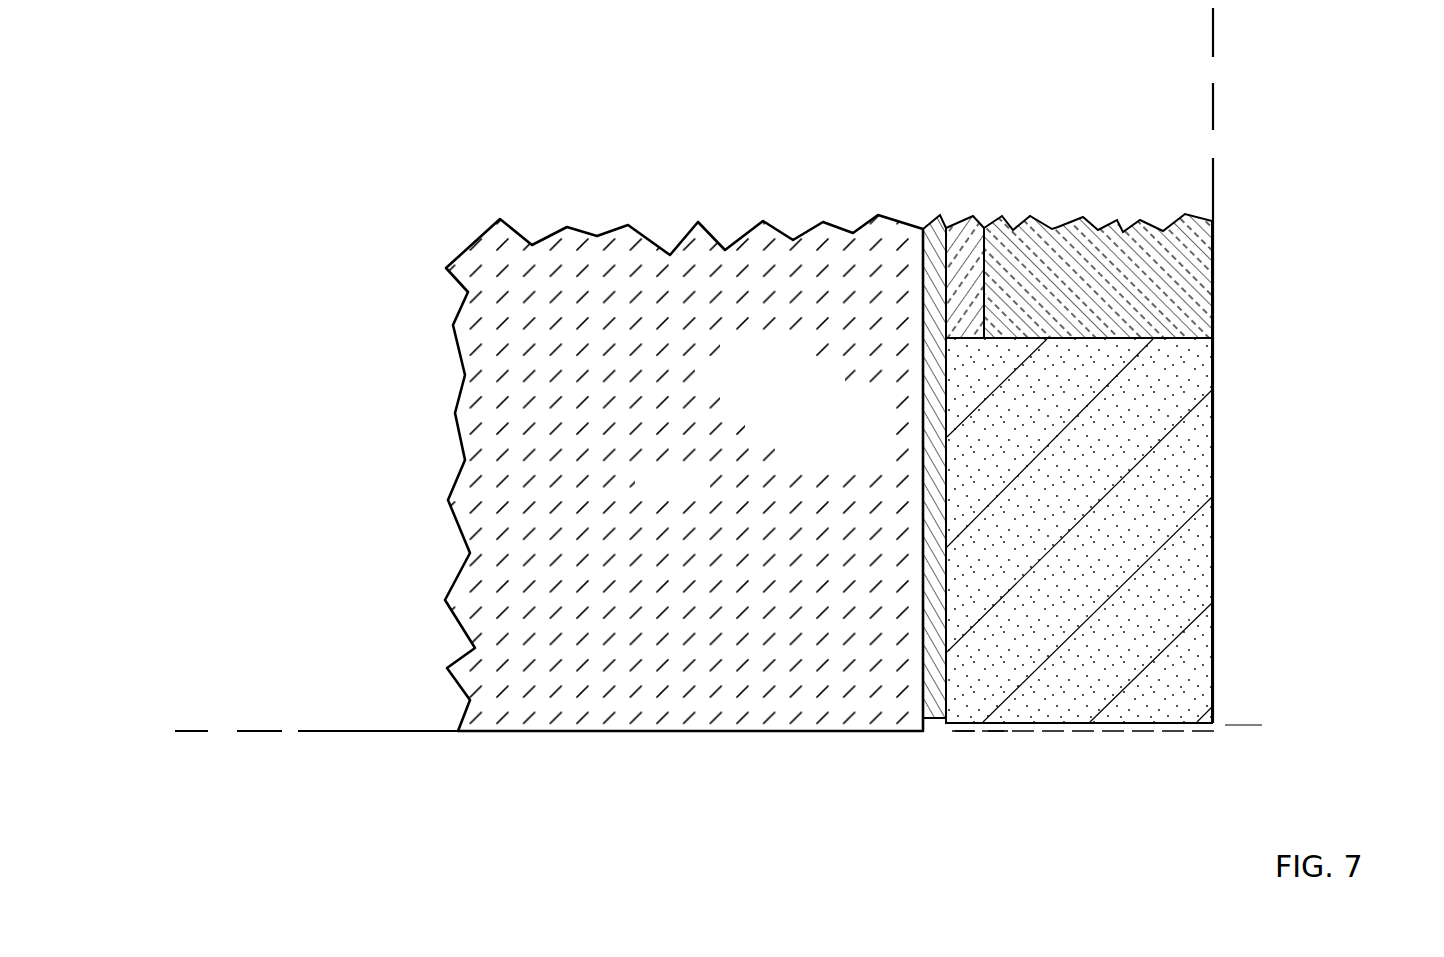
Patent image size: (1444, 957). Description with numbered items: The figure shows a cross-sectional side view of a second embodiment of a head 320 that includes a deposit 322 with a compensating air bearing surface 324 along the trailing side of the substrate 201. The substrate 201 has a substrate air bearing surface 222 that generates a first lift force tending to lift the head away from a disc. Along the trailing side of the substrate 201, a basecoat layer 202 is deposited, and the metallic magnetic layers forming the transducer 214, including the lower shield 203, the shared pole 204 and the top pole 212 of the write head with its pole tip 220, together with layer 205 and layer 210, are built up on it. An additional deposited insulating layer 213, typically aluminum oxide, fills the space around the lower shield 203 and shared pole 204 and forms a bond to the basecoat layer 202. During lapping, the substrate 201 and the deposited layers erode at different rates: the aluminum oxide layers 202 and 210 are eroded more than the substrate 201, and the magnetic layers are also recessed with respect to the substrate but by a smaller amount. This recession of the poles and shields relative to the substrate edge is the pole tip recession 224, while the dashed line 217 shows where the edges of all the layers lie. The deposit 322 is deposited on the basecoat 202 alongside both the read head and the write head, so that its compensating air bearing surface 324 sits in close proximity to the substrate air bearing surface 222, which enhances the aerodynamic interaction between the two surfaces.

The substrate 201 is at (689, 493).
The basecoat layer 202 is at (932, 230).
The lower shield 203 is at (948, 732).
The shared pole 204 is at (977, 727).
The layer 205 is at (964, 757).
The layer 210 is at (1082, 218).
The top pole 212 is at (1022, 728).
The deposited insulating layer 213 is at (958, 230).
The transducer 214 is at (882, 440).
The dashed line 217 is at (1187, 731).
The pole tip 220 is at (999, 750).
The substrate air bearing surface 222 is at (655, 733).
The pole tip recession 224 is at (1247, 748).
The head 320 is at (1326, 251).
The deposit 322 is at (1145, 515).
The compensating air bearing surface 324 is at (1118, 722).